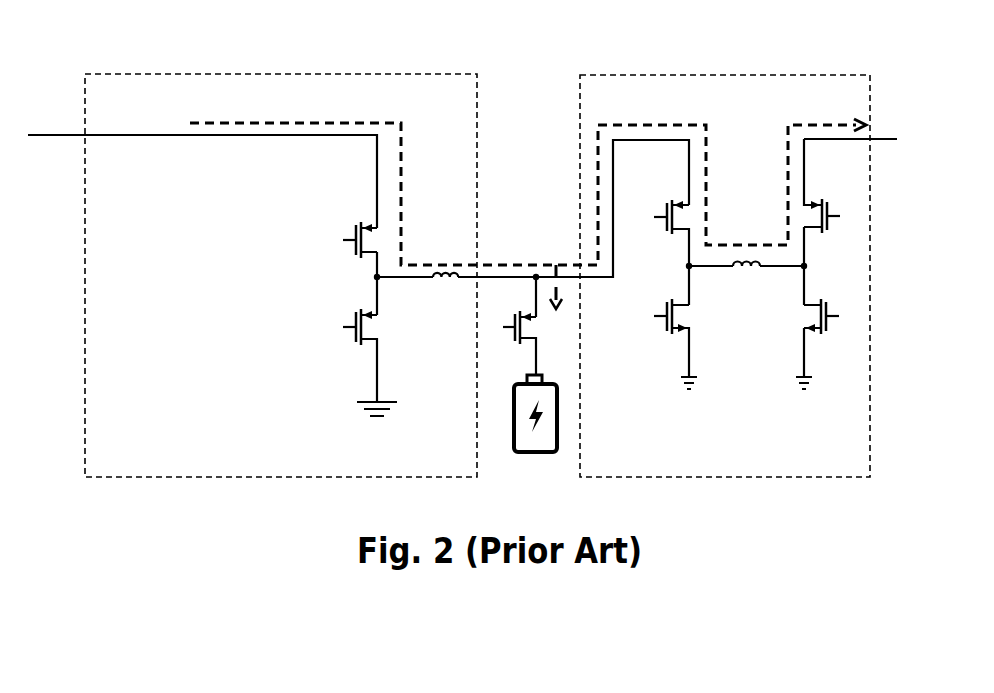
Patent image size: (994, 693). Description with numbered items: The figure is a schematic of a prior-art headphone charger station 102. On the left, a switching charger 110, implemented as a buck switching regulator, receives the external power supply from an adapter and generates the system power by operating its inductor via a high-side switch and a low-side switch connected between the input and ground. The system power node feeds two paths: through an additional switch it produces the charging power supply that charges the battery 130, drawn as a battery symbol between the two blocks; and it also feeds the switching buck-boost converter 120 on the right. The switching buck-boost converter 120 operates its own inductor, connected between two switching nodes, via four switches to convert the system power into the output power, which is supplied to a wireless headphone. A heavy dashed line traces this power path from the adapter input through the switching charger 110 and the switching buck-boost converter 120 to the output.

The headphone charger station 102 is at (120, 38).
The switching charger 110 is at (141, 461).
The switching buck-boost converter 120 is at (642, 456).
The battery 130 is at (512, 396).